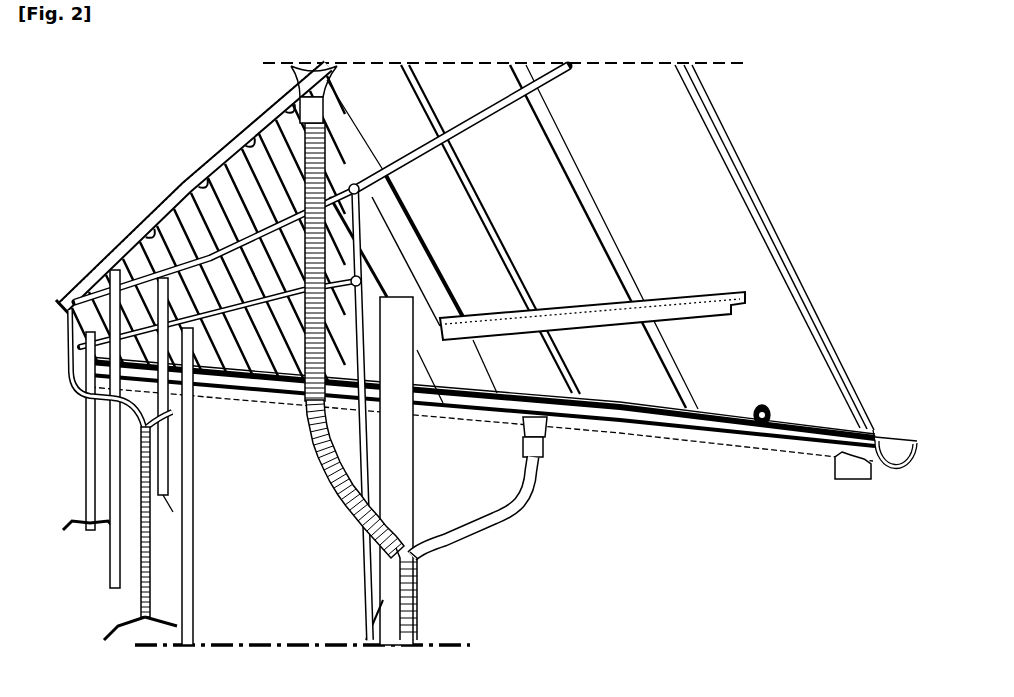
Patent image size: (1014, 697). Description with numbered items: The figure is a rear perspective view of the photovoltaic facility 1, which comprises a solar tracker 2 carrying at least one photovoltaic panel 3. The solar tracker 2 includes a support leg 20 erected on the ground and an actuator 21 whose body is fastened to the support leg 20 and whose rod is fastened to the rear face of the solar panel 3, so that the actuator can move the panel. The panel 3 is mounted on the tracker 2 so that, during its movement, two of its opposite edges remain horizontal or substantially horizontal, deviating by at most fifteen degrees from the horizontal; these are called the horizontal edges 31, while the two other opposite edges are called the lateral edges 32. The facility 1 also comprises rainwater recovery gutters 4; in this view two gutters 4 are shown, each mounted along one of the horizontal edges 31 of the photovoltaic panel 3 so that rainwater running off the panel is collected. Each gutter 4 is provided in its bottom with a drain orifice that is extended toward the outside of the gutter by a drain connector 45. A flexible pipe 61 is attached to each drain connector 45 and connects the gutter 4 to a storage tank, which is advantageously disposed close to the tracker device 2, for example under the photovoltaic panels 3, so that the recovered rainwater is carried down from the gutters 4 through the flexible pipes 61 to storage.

The photovoltaic facility 1 is at (122, 101).
The solar tracker 2 is at (150, 463).
The photovoltaic panel 3 is at (608, 370).
The rainwater recovery gutter 4 is at (150, 228).
The support leg 20 is at (186, 526).
The actuator 21 is at (358, 482).
The horizontal edges 31 is at (203, 188).
The lateral edges 32 is at (755, 195).
The drain connector 45 is at (305, 95).
The flexible pipe 61 is at (333, 458).